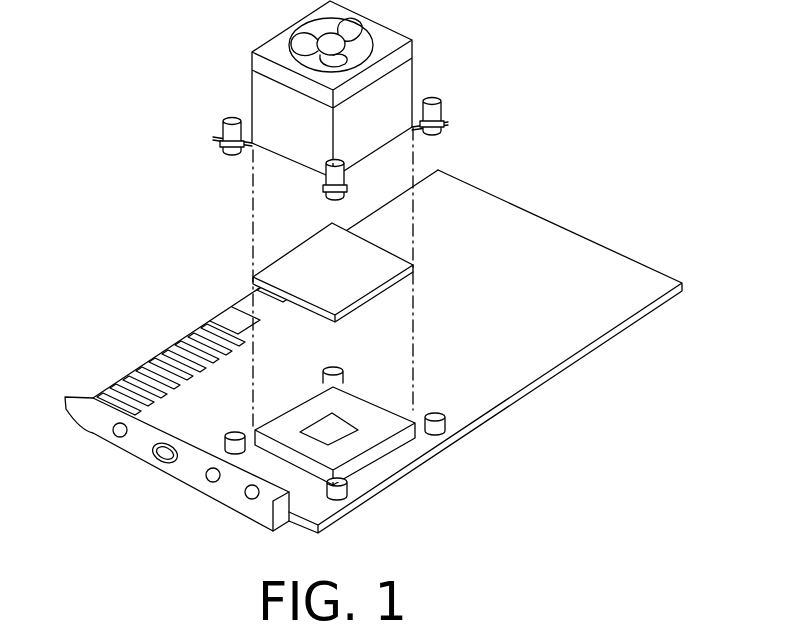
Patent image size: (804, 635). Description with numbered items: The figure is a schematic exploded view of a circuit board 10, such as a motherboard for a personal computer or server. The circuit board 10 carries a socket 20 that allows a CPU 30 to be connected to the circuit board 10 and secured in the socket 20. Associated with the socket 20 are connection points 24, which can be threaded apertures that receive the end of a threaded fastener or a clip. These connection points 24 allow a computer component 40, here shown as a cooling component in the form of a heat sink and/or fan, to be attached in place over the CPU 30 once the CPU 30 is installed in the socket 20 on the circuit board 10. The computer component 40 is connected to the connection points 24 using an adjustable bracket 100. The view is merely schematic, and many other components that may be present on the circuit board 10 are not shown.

The circuit board 10 is at (600, 242).
The socket 20 is at (380, 450).
The connection point 24 is at (448, 428).
The CPU 30 is at (383, 290).
The computer component 40 is at (397, 87).
The adjustable bracket 100 is at (442, 123).